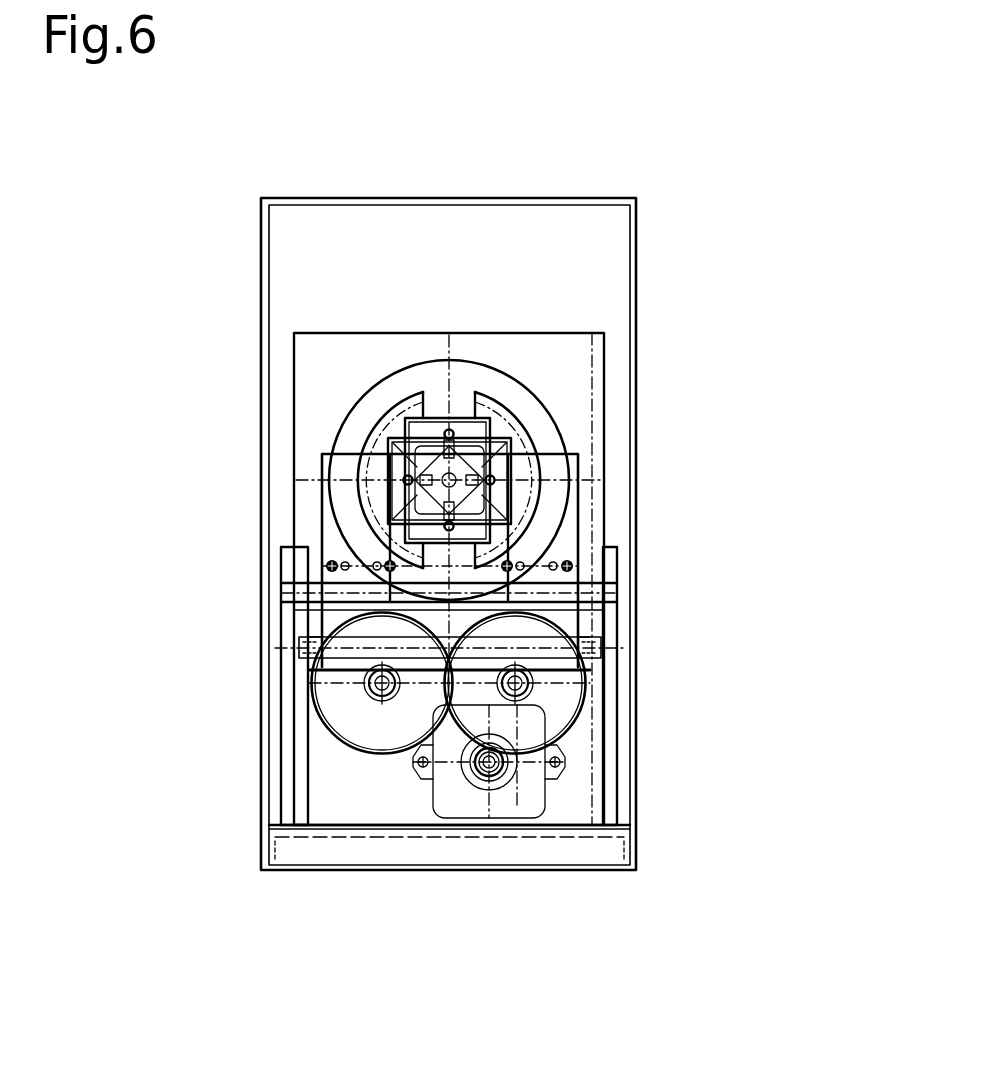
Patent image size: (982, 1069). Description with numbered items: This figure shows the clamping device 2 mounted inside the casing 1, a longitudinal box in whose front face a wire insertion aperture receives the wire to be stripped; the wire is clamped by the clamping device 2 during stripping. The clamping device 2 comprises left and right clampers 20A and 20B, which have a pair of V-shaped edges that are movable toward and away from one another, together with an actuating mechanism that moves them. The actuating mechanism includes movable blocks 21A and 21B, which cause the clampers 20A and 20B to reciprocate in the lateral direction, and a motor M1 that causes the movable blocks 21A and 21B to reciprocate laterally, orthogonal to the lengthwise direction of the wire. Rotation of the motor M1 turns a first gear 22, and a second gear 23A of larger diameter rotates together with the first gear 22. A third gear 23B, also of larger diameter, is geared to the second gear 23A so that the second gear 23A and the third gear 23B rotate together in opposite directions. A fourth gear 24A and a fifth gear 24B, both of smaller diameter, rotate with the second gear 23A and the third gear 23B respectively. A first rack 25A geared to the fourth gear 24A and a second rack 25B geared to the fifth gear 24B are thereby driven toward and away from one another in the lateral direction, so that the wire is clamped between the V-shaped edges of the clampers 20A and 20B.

The casing 1 is at (521, 190).
The clamping device 2 is at (437, 407).
The left clamper 20A is at (522, 470).
The right clamper 20B is at (368, 467).
The movable block 21A is at (557, 607).
The movable block 21B is at (348, 600).
The first gear 22 is at (480, 778).
The second gear 23A is at (582, 712).
The third gear 23B is at (318, 715).
The fourth gear 24A is at (535, 690).
The fifth gear 24B is at (362, 690).
The first rack 25A is at (580, 655).
The second rack 25B is at (330, 650).
The motor M1 is at (502, 803).